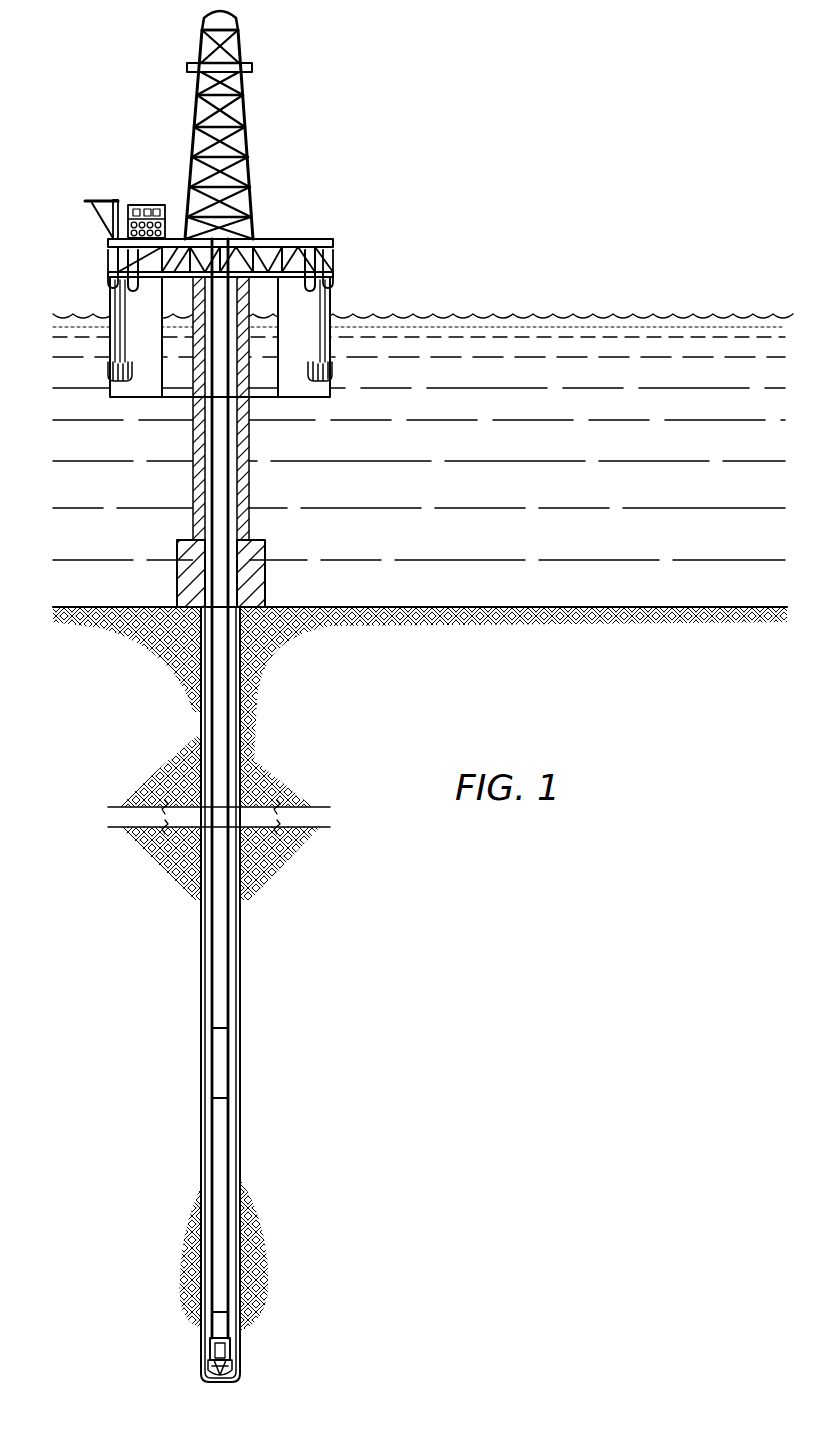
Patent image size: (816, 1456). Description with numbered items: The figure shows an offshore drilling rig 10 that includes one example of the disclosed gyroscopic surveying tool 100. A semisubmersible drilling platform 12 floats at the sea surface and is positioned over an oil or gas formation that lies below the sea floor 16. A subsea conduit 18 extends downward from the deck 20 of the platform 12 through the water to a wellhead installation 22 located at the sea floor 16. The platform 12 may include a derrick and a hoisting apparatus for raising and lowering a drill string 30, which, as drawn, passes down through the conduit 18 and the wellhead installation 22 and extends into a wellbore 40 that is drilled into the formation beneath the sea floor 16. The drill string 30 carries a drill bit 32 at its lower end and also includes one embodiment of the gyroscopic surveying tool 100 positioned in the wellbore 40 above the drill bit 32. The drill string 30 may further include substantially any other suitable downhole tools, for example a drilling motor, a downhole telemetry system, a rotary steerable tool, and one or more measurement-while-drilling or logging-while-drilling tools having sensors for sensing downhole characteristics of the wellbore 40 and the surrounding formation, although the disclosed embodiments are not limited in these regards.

The drilling rig 10 is at (330, 140).
The semisubmersible drilling platform 12 is at (300, 238).
The sea floor 16 is at (472, 607).
The subsea conduit 18 is at (248, 497).
The deck 20 is at (335, 273).
The wellhead installation 22 is at (266, 541).
The drill string 30 is at (222, 433).
The drill bit 32 is at (208, 1350).
The wellbore 40 is at (204, 718).
The gyroscopic surveying tool 100 is at (222, 1066).